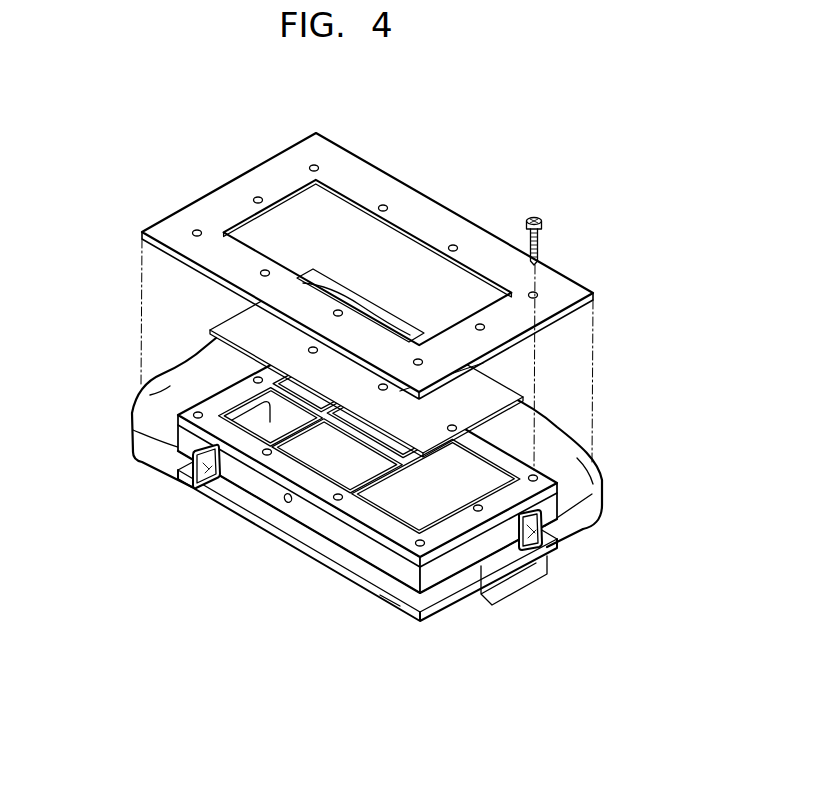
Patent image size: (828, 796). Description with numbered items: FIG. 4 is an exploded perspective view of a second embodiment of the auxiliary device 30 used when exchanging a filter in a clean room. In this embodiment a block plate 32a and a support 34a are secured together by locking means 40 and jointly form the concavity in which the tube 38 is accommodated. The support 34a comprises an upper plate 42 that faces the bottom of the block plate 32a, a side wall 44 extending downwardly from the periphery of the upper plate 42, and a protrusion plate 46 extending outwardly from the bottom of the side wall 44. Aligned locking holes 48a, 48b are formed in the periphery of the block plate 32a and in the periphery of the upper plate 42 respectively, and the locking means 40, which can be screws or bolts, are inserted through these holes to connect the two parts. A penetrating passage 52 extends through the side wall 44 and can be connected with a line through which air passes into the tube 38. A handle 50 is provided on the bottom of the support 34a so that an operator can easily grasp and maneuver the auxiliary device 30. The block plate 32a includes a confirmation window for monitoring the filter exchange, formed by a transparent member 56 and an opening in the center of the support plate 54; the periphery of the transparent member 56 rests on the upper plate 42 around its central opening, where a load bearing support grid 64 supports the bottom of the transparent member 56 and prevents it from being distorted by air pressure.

The auxiliary device 30 is at (552, 167).
The block plate 32a is at (410, 295).
The support 34a is at (387, 618).
The tube 38 is at (165, 386).
The locking means 40 is at (540, 221).
The upper plate 42 is at (394, 488).
The side wall 44 is at (372, 550).
The protrusion plate 46 is at (376, 585).
The locking hole 48a is at (197, 230).
The locking hole 48b is at (337, 498).
The handle 50 is at (553, 558).
The penetrating passage 52 is at (288, 503).
The support plate 54 is at (370, 266).
The transparent member 56 is at (512, 381).
The load bearing support grid 64 is at (240, 497).